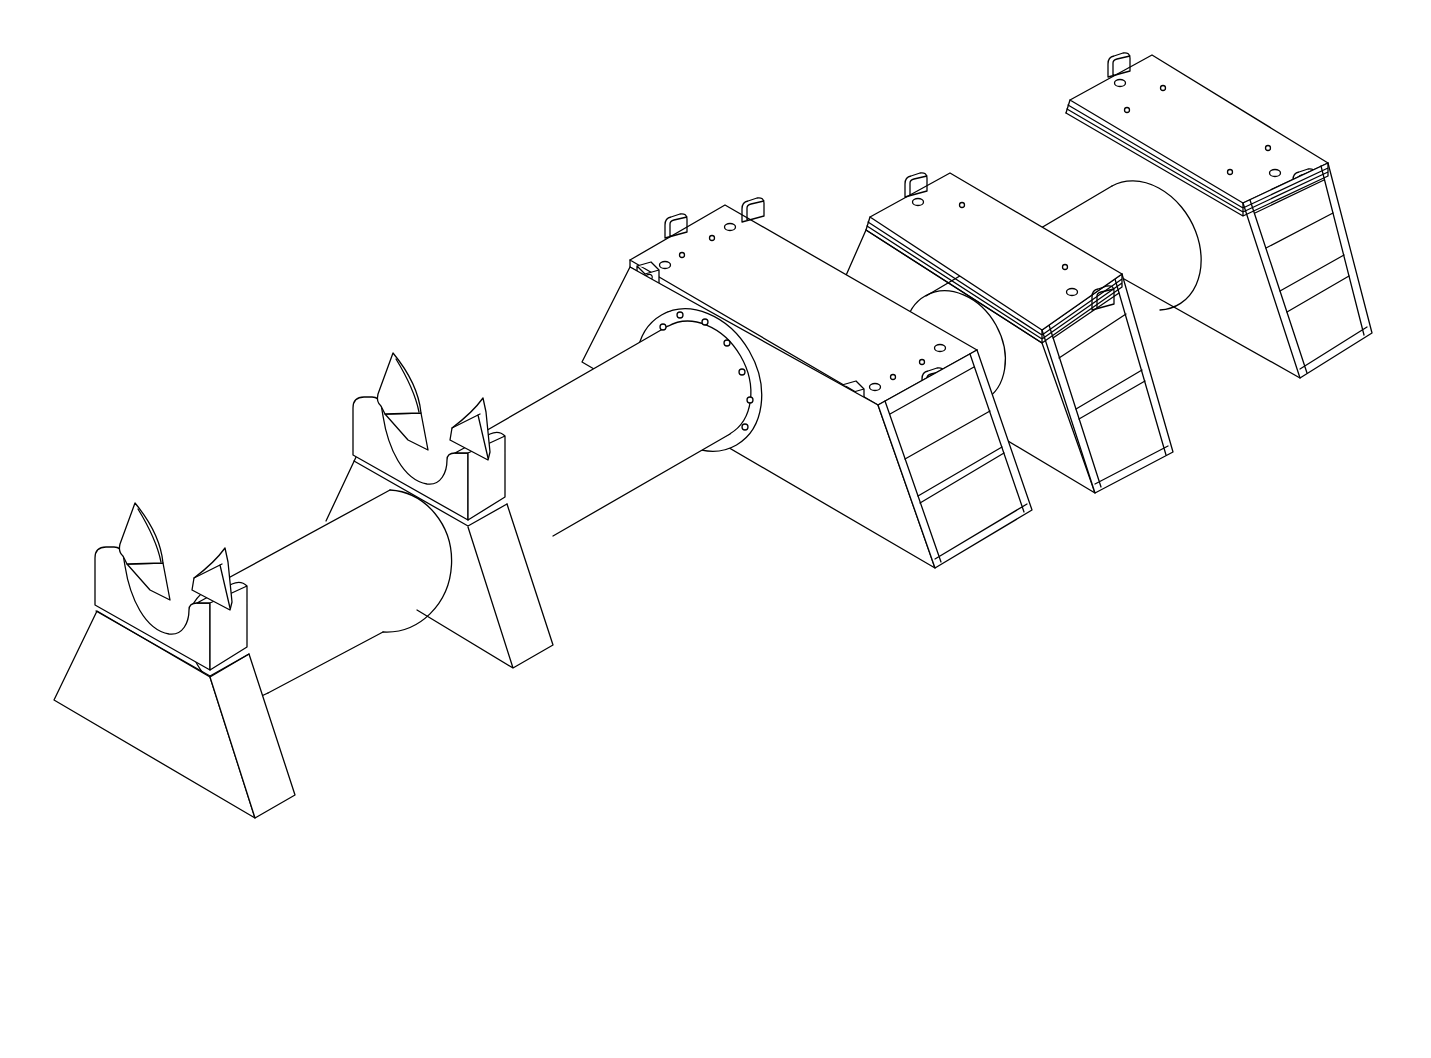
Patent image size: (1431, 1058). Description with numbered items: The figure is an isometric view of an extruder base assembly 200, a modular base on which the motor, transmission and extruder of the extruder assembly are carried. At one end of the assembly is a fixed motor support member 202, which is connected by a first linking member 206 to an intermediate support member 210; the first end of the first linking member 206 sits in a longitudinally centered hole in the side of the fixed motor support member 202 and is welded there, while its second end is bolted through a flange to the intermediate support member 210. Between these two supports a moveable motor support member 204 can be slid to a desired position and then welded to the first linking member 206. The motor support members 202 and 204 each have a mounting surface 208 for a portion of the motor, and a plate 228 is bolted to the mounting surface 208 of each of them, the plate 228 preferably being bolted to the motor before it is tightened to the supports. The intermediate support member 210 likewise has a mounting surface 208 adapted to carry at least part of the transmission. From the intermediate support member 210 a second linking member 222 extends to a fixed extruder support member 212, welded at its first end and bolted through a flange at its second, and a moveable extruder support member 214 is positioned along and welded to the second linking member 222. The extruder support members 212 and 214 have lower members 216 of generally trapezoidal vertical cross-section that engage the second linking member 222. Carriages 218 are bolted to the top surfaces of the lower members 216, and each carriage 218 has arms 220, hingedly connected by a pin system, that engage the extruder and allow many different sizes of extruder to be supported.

The extruder base assembly 200 is at (732, 435).
The fixed motor support member 202 is at (1350, 365).
The moveable motor support member 204 is at (1163, 469).
The first linking member 206 is at (1167, 278).
The mounting surface 208 is at (726, 245).
The intermediate support member 210 is at (840, 500).
The fixed extruder support member 212 is at (227, 611).
The moveable extruder support member 214 is at (465, 485).
The lower member 216 is at (148, 726).
The carriage 218 is at (363, 430).
The carriage arm 220 is at (213, 540).
The second linking member 222 is at (578, 398).
The plate 228 is at (1052, 228).